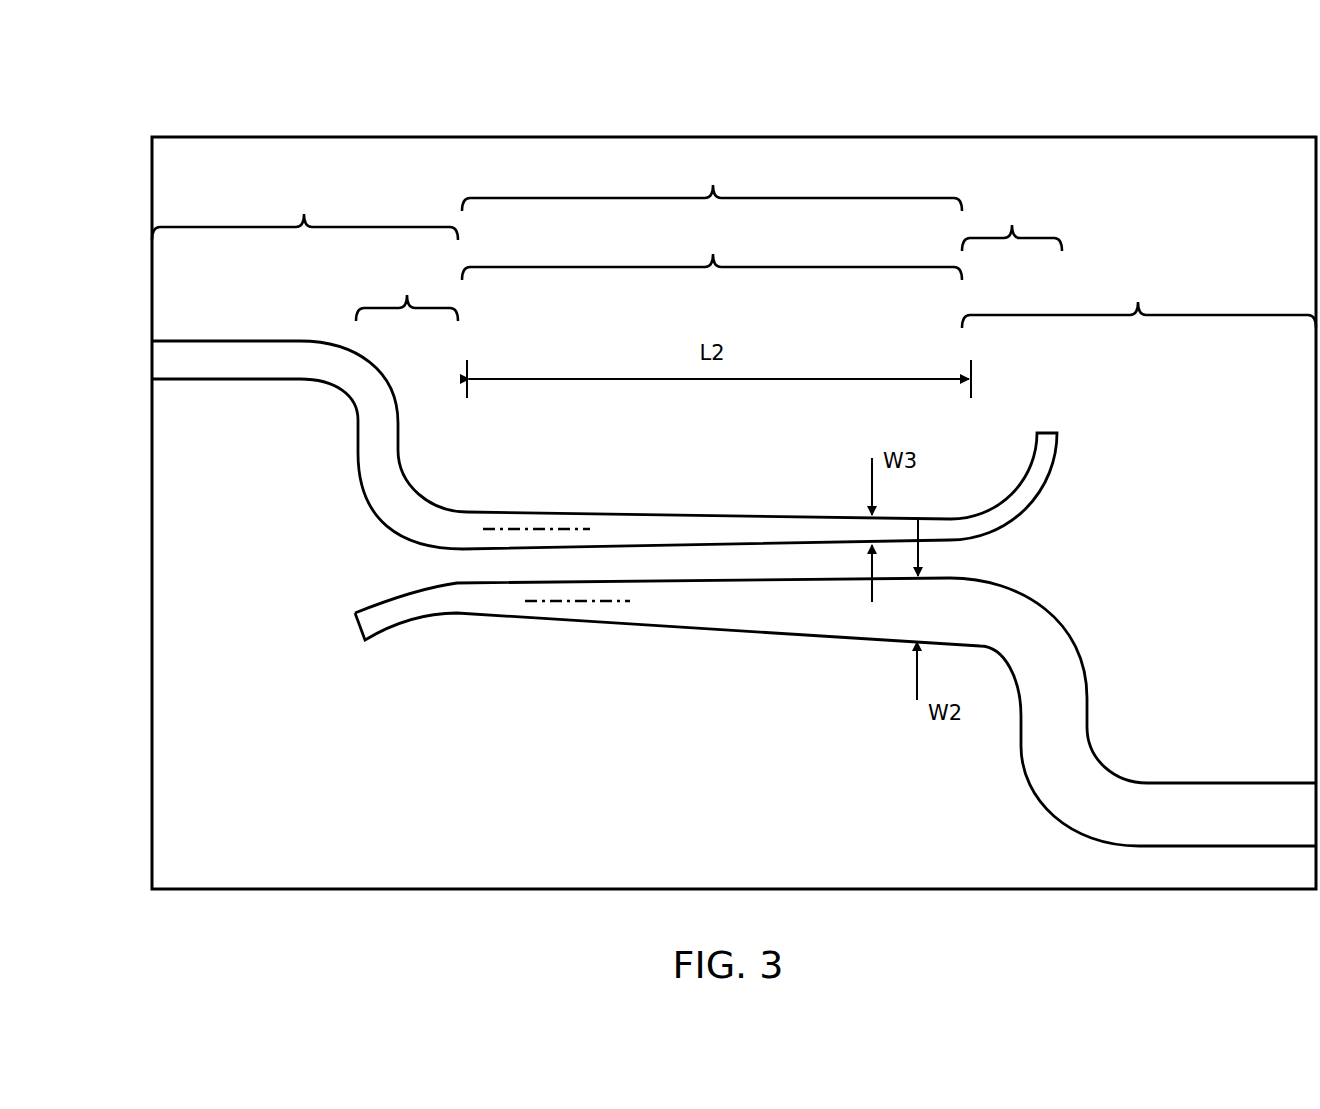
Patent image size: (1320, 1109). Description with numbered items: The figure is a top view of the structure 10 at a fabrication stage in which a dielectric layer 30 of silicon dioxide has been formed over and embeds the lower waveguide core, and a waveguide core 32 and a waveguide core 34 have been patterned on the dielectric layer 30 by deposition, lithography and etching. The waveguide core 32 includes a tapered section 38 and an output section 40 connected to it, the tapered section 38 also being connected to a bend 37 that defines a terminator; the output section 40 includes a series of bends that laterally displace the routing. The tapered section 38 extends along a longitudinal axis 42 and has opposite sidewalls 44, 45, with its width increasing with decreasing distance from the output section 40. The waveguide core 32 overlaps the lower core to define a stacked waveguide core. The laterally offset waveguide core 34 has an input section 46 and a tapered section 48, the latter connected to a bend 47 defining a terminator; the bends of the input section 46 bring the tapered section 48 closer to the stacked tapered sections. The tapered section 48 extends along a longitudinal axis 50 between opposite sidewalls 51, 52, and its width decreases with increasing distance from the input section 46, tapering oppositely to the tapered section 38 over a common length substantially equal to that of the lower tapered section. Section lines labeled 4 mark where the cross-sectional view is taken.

The structure 10 is at (175, 120).
The dielectric layer 30 is at (204, 834).
The waveguide core 32 is at (700, 595).
The waveguide core 34 is at (655, 528).
The bend 37 is at (407, 291).
The tapered section 38 is at (712, 247).
The output section 40 is at (1139, 297).
The longitudinal axis 42 is at (560, 602).
The sidewall 44 is at (783, 578).
The sidewall 45 is at (618, 627).
The input section 46 is at (305, 207).
The bend 47 is at (1012, 221).
The tapered section 48 is at (712, 182).
The longitudinal axis 50 is at (522, 529).
The sidewall 51 is at (705, 515).
The sidewall 52 is at (503, 550).
The section line for FIG. 4 is at (769, 427).